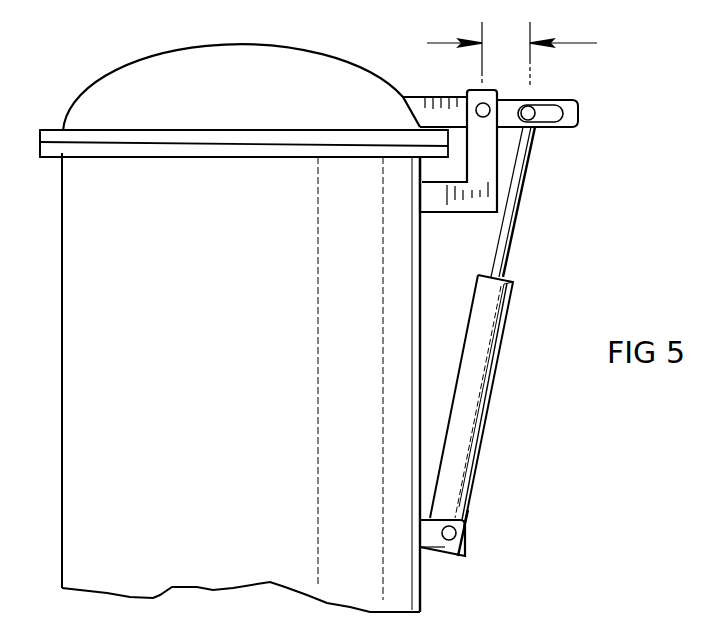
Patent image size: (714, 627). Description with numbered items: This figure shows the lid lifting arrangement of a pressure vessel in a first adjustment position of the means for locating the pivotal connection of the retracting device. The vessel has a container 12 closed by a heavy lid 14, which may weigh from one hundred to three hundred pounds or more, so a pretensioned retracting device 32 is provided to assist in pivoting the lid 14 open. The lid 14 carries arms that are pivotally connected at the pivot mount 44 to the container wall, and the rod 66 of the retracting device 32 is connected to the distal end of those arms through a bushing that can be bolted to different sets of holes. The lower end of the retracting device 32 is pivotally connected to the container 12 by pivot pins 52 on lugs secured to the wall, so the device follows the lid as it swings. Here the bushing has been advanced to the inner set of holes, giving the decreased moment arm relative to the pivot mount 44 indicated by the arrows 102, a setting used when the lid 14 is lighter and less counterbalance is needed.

The container 12 is at (86, 397).
The lid 14 is at (328, 77).
The pivot mount 44 is at (490, 102).
The arrows 102 is at (568, 45).
The rod 66 is at (514, 232).
The pretensioned retracting device 32 is at (501, 374).
The pivot pins 52 is at (456, 533).